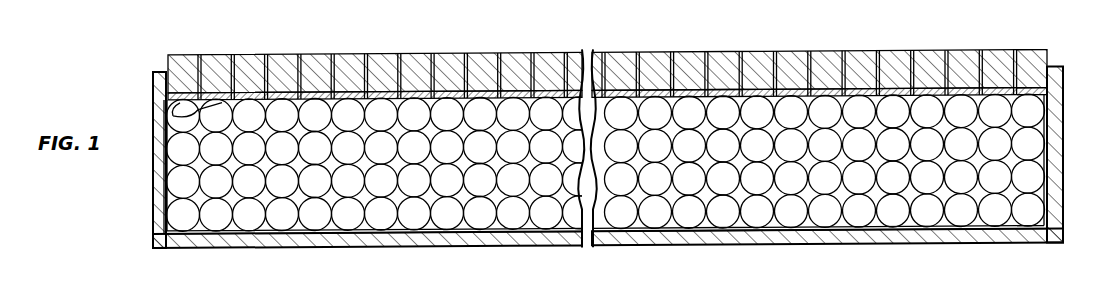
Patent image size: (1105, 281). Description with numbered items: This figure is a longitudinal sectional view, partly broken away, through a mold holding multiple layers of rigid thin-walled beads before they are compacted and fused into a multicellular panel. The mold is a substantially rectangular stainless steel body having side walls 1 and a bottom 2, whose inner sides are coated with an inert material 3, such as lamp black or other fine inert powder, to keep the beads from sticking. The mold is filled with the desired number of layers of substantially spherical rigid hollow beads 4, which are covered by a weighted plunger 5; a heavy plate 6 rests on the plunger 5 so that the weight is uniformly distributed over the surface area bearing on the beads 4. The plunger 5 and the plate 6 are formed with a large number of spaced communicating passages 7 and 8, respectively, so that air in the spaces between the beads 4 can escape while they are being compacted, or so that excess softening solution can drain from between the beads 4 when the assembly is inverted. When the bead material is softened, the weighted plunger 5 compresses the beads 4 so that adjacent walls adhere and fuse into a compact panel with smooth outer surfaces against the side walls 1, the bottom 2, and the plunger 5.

The side walls 1 is at (161, 179).
The bottom 2 is at (259, 237).
The inert material 3 is at (1049, 166).
The rigid hollow beads 4 is at (173, 116).
The weighted plunger 5 is at (1035, 96).
The heavy plate 6 is at (628, 61).
The communicating passages 7 is at (772, 96).
The communicating passages 8 is at (838, 74).